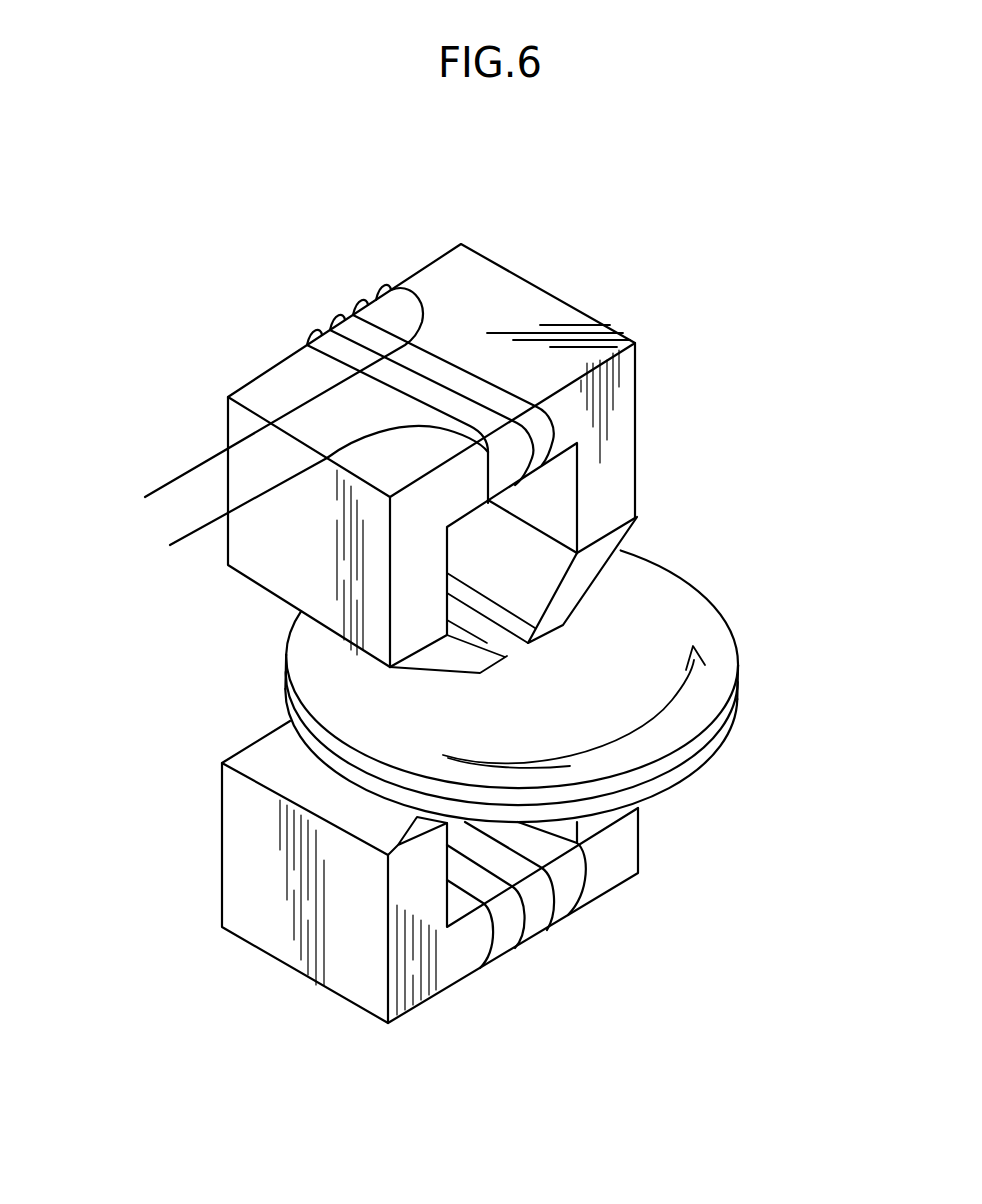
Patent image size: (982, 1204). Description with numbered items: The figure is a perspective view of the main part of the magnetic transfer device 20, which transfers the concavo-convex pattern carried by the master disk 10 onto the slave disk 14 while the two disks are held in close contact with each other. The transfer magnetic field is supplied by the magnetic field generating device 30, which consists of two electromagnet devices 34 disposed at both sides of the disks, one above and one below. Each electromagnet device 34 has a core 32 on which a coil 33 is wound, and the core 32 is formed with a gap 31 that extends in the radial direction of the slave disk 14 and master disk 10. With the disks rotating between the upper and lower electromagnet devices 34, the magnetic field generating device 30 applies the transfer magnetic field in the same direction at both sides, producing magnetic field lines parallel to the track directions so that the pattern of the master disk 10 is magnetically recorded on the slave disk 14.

The magnetic transfer device 20 is at (98, 272).
The magnetic field generating device 30 is at (293, 343).
The electromagnet device 34 is at (547, 310).
The core 32 is at (588, 571).
The gap 31 is at (515, 647).
The coil 33 is at (380, 284).
The slave disk 14 is at (712, 708).
The master disk 10 is at (682, 773).